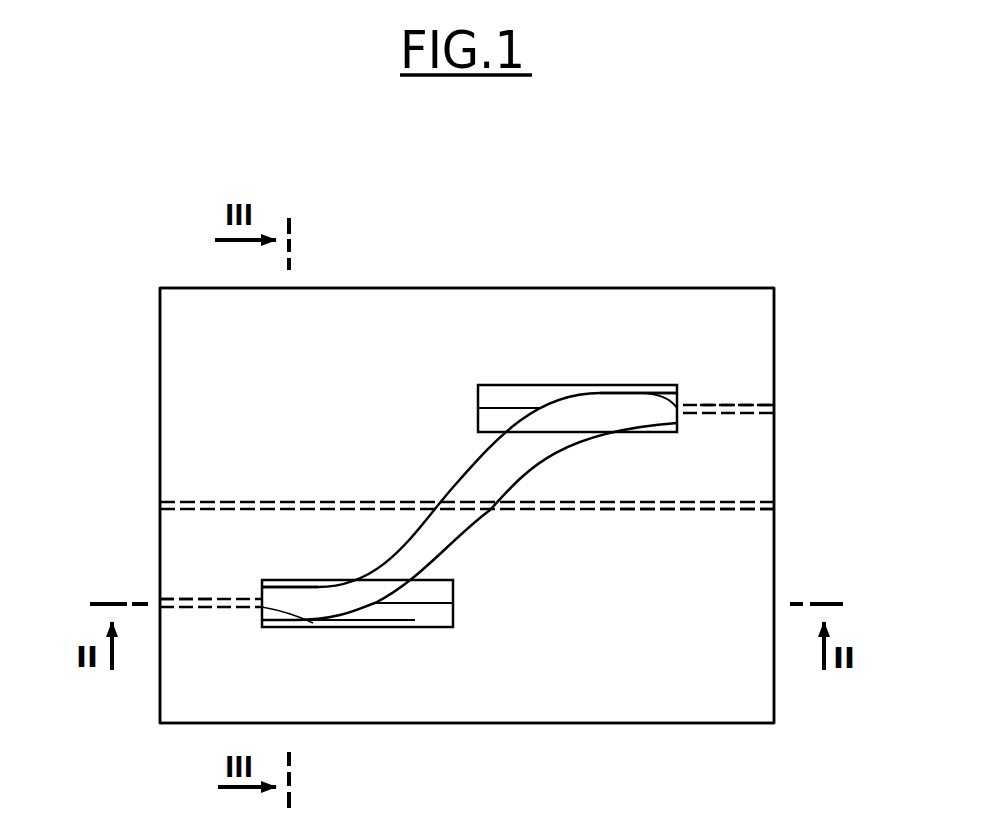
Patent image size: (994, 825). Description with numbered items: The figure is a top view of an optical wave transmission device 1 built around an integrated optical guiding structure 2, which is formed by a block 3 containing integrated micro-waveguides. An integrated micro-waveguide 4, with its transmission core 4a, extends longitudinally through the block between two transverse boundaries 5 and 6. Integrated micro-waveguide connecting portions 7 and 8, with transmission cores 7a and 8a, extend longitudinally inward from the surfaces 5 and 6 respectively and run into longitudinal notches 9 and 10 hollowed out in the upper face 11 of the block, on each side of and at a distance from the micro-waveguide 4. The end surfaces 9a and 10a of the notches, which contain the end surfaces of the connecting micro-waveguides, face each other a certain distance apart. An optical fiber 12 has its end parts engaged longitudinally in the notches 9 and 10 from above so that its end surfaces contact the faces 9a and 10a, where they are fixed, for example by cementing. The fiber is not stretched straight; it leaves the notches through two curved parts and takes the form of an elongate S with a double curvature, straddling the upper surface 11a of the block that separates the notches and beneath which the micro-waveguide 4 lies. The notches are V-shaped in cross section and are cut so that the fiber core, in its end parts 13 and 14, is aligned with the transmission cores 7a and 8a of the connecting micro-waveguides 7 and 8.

The optical wave transmission device 1 is at (715, 262).
The integrated optical guiding structure 2 is at (236, 369).
The block 3 is at (672, 640).
The integrated micro-waveguide 4 is at (222, 491).
The transmission core 4a is at (740, 512).
The transverse boundary 5 is at (160, 371).
The transverse boundary 6 is at (775, 325).
The integrated micro-waveguide connecting portion 7 is at (220, 591).
The transmission core 7a is at (195, 599).
The integrated micro-waveguide connecting portion 8 is at (749, 426).
The transmission core 8a is at (740, 405).
The longitudinal notch 9 is at (427, 613).
The end surface 9a is at (297, 600).
The longitudinal notch 10 is at (509, 398).
The end surface 10a is at (652, 395).
The upper face 11 is at (367, 353).
The upper surface 11a is at (537, 560).
The optical fiber 12 is at (450, 522).
The end part 13 is at (313, 623).
The end part 14 is at (643, 410).